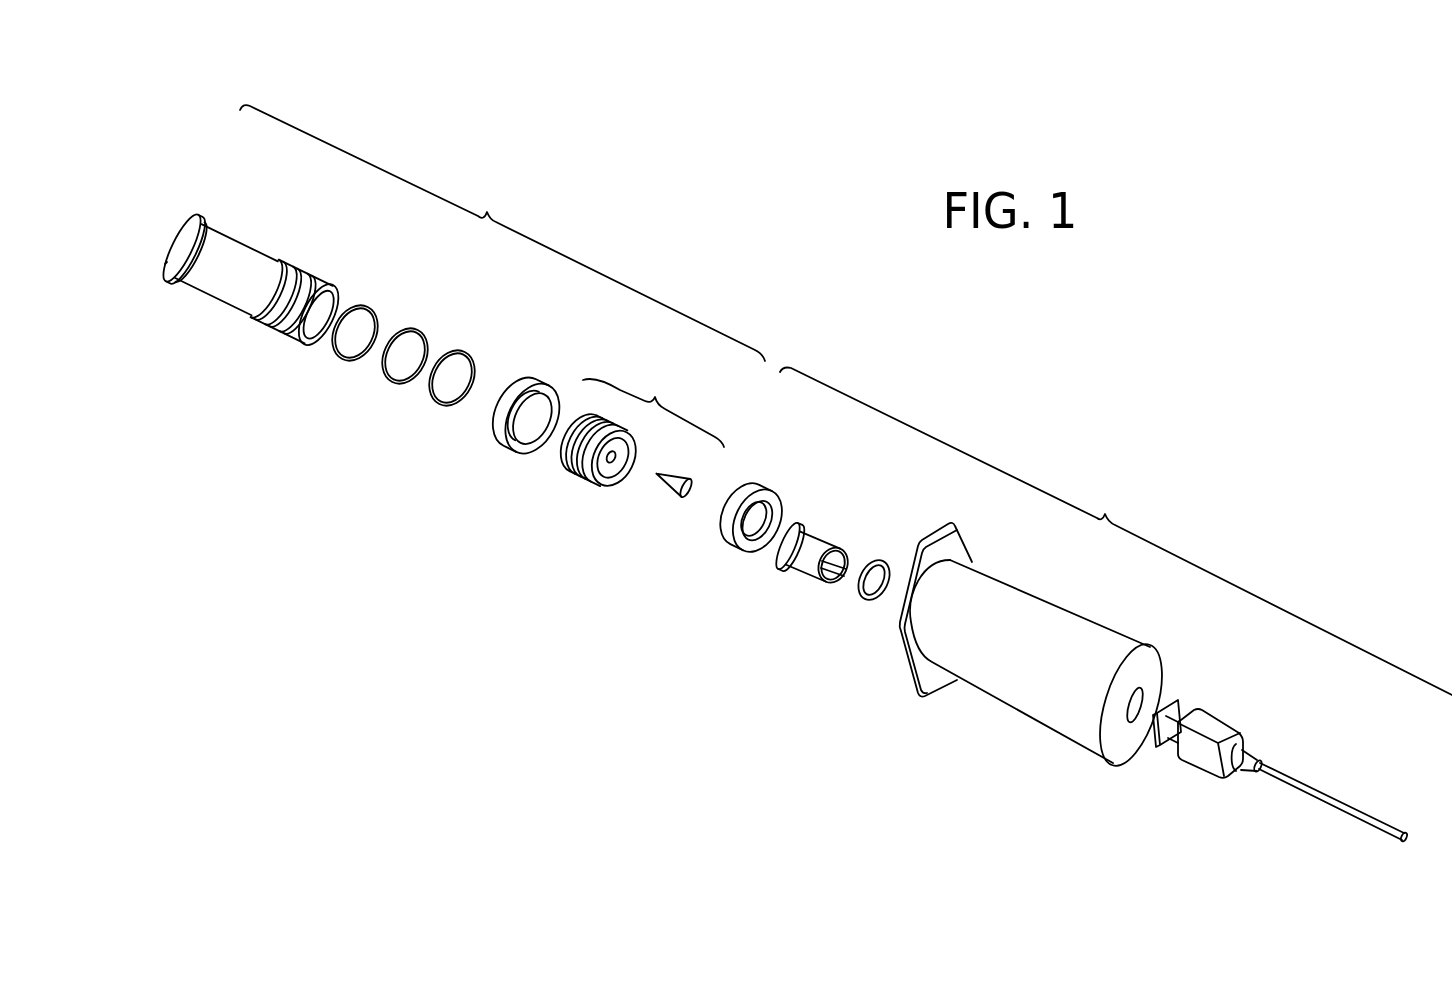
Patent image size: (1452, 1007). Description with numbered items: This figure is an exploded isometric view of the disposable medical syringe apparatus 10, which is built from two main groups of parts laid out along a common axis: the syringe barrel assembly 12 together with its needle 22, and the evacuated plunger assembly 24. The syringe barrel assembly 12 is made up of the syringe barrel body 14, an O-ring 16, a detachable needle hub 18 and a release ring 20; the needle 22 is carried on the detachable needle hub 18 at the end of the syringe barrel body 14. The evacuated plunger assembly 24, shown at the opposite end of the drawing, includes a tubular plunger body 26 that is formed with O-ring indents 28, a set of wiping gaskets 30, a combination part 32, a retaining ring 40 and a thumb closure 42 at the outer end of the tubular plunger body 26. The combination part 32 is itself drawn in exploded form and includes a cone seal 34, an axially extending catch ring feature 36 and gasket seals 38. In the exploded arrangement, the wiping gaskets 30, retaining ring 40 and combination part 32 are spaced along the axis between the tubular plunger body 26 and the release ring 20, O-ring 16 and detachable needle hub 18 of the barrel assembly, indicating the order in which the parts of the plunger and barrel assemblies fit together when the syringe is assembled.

The disposable medical syringe apparatus 10 is at (1052, 359).
The syringe barrel assembly 12 is at (1081, 605).
The syringe barrel body 14 is at (1043, 597).
The O-ring 16 is at (886, 556).
The detachable needle hub 18 is at (822, 524).
The release ring 20 is at (755, 485).
The needle 22 is at (1247, 740).
The evacuated plunger assembly 24 is at (445, 283).
The tubular plunger body 26 is at (246, 244).
The O-ring indents 28 is at (298, 270).
The wiping gaskets 30 is at (460, 350).
The combination part 32 is at (635, 477).
The cone seal 34 is at (672, 494).
The axially extending catch ring feature 36 is at (611, 487).
The gasket seals 38 is at (589, 468).
The retaining ring 40 is at (531, 378).
The thumb closure 42 is at (165, 264).